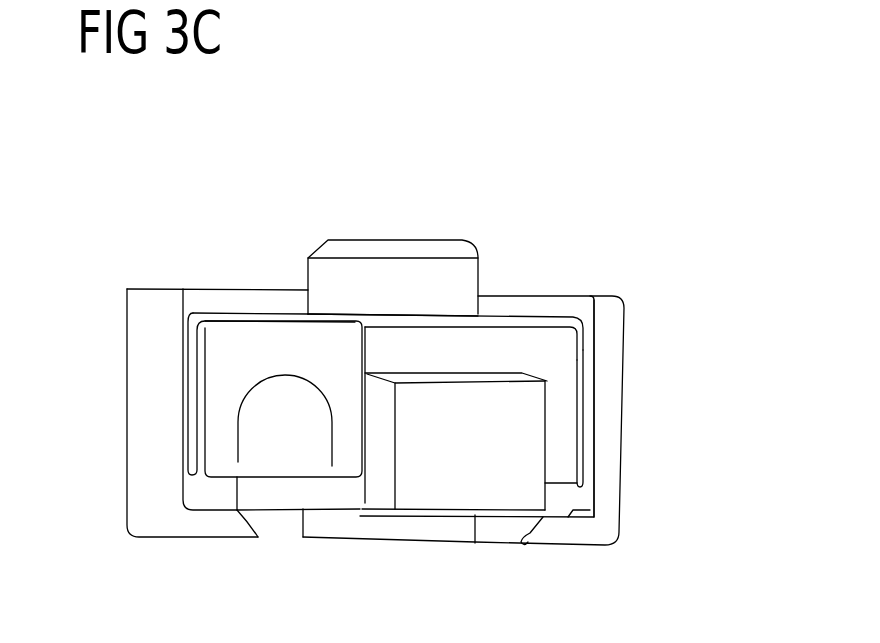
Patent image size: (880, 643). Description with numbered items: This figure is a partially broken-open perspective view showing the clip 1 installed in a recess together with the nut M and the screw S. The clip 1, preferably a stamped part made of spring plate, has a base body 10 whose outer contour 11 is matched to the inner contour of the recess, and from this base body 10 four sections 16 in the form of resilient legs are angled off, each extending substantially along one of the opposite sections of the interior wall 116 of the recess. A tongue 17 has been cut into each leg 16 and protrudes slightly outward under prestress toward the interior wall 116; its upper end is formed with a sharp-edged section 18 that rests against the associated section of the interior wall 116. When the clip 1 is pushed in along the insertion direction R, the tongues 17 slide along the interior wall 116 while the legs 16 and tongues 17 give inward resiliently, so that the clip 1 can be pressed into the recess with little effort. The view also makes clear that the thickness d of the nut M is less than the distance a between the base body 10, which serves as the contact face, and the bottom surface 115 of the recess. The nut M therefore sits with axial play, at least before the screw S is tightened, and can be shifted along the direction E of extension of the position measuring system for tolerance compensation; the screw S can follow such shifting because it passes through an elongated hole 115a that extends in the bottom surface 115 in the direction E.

The clip 1 is at (557, 305).
The base body 10 is at (260, 315).
The outer contour 11 is at (513, 315).
The resilient leg 16 is at (583, 350).
The tongue 17 is at (592, 412).
The sharp-edged section 18 is at (593, 386).
The bottom surface 115 is at (555, 507).
The elongated hole 115a is at (527, 546).
The interior wall 116 is at (597, 438).
The nut M is at (522, 467).
The screw S is at (458, 282).
The insertion direction R is at (438, 112).
The direction of extension E is at (472, 600).
The distance a is at (409, 342).
The thickness d is at (468, 394).